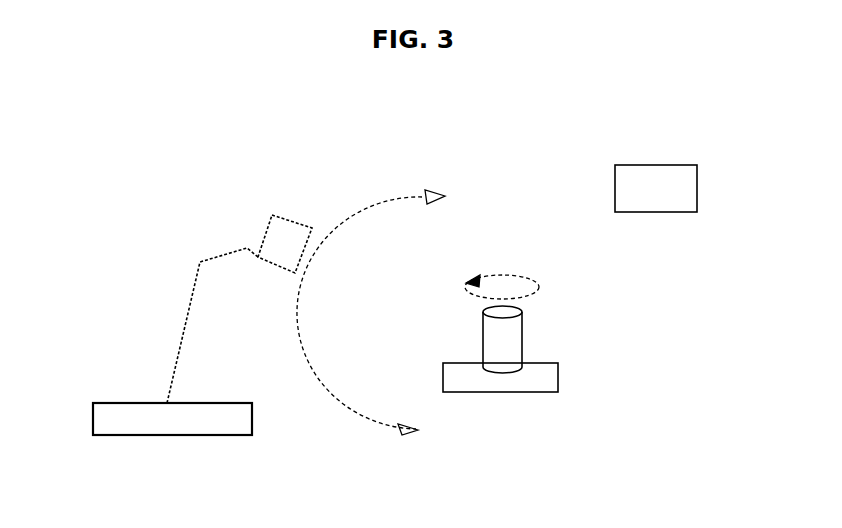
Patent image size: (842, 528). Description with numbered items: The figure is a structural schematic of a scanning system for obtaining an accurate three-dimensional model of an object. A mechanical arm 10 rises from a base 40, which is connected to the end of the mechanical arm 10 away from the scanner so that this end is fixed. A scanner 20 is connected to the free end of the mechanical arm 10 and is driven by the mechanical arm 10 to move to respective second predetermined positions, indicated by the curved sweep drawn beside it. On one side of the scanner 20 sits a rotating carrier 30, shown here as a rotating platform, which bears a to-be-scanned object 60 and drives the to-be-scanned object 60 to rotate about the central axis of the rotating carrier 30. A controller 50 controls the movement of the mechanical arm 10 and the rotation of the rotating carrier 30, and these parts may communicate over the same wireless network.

The mechanical arm 10 is at (182, 323).
The scanner 20 is at (277, 212).
The rotating carrier 30 is at (562, 380).
The base 40 is at (207, 418).
The controller 50 is at (665, 160).
The to-be-scanned object 60 is at (525, 332).